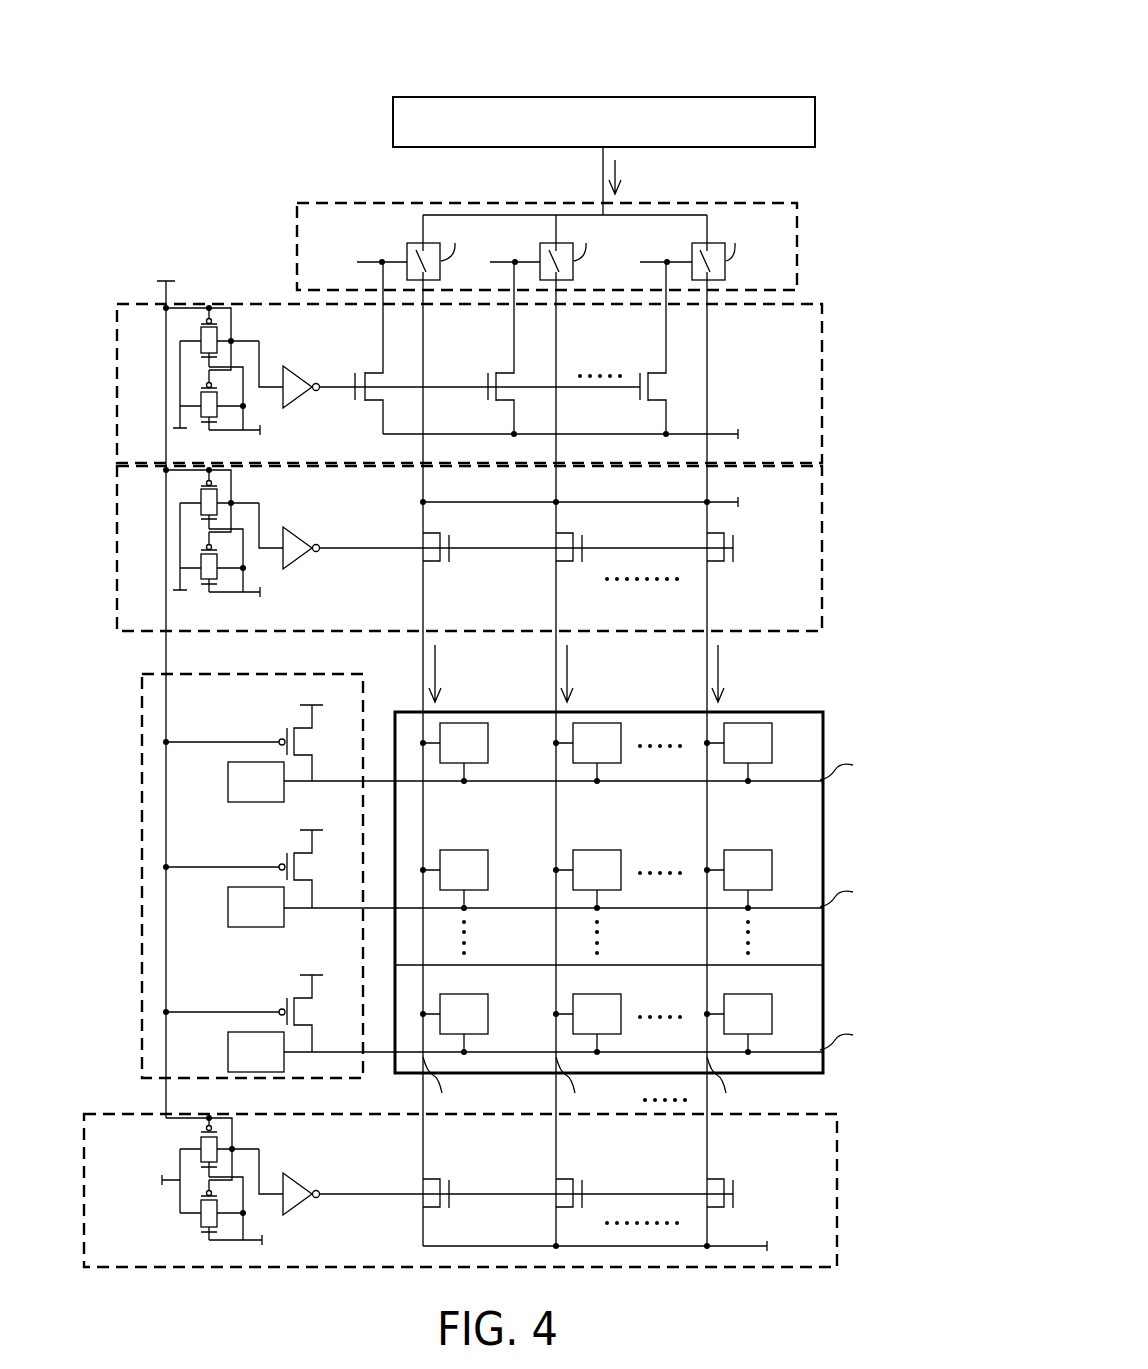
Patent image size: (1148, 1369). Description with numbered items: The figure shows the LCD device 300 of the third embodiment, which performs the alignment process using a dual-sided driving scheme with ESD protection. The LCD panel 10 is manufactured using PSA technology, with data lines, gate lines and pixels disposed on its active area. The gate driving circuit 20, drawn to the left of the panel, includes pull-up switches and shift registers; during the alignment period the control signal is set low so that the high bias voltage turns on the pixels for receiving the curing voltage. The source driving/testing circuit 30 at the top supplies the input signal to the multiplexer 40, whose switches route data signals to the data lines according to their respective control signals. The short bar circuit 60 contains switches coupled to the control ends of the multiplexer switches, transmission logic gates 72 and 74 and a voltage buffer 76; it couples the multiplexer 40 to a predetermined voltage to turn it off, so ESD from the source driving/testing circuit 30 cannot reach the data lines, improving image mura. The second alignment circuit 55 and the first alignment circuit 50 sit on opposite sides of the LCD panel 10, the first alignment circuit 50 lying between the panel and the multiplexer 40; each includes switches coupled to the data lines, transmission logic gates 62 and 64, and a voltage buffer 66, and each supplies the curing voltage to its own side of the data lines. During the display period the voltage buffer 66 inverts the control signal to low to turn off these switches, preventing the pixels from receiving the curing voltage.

The LCD device 300 is at (814, 76).
The source driving/testing circuit 30 is at (393, 122).
The multiplexer 40 is at (297, 206).
The short bar circuit 60 is at (509, 362).
The transmission logic gate 72 is at (201, 338).
The transmission logic gate 74 is at (201, 413).
The voltage buffer 76 is at (301, 374).
The second alignment circuit 55 is at (822, 548).
The transmission logic gate 62 is at (201, 500).
The transmission logic gate 64 is at (201, 575).
The voltage buffer 66 is at (301, 536).
The gate driving circuit 20 is at (142, 878).
The LCD panel 10 is at (817, 712).
The first alignment circuit 50 is at (837, 1172).